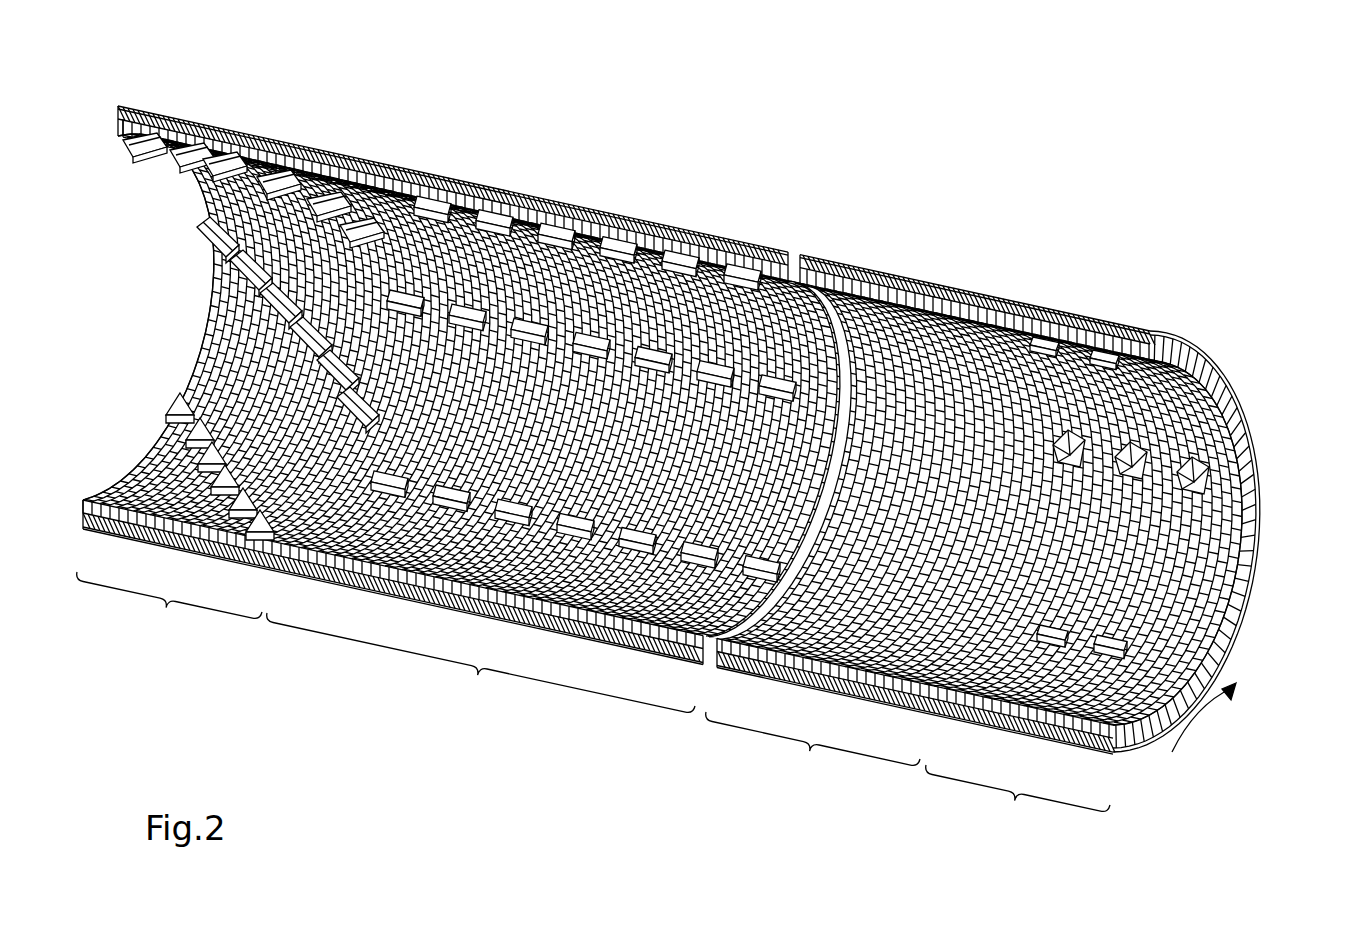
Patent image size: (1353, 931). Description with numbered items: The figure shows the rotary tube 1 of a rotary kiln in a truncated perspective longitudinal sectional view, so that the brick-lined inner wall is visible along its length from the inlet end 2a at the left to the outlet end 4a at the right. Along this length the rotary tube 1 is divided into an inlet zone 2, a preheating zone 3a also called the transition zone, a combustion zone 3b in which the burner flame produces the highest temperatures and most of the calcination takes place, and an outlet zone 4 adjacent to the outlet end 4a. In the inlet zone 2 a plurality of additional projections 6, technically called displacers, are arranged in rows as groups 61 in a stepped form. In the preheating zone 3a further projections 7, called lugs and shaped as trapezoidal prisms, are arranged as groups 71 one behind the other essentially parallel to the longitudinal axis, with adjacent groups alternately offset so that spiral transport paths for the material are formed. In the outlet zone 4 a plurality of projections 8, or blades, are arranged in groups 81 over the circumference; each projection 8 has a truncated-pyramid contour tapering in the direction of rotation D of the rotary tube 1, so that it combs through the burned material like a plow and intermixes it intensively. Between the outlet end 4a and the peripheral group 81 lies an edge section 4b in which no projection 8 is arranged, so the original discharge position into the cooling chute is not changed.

The rotary tube 1 is at (616, 409).
The inlet zone 2 is at (169, 612).
The inlet end 2a is at (197, 175).
The preheating zone 3a is at (481, 666).
The combustion zone 3b is at (813, 538).
The outlet zone 4 is at (1018, 801).
The outlet end 4a is at (1248, 413).
The edge section 4b is at (1227, 537).
The additional projections 6 is at (258, 172).
The further projections 7 is at (673, 267).
The projections 8 is at (1045, 333).
The groups of additional projections 61 is at (200, 88).
The groups of further projections 71 is at (525, 180).
The groups of projections 81 is at (977, 279).
The direction of rotation D is at (1203, 730).